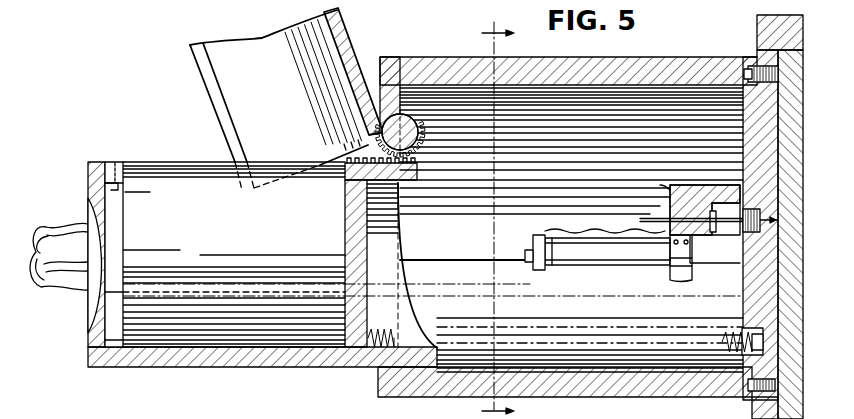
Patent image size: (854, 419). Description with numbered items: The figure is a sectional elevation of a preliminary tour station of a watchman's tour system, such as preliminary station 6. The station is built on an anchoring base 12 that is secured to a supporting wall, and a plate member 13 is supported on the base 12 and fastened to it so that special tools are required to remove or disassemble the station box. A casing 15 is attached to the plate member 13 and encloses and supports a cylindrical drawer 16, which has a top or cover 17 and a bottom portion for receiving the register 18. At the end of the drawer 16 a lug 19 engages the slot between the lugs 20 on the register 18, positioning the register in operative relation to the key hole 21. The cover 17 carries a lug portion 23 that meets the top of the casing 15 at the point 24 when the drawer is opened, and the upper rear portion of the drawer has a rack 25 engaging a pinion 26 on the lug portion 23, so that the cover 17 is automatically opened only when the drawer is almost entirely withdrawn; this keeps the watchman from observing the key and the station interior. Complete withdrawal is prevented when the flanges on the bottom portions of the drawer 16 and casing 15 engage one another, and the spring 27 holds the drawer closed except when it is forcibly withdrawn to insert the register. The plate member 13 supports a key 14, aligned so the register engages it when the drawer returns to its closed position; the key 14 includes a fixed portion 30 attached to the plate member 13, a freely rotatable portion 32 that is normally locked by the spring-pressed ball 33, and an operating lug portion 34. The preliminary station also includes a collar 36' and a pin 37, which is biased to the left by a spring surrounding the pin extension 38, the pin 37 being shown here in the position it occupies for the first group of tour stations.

The preliminary station 6 is at (505, 220).
The anchoring base 12 is at (757, 57).
The plate member 13 is at (757, 163).
The key 14 is at (583, 256).
The casing 15 is at (628, 67).
The cylindrical drawer 16 is at (237, 368).
The cover 17 is at (340, 52).
The register 18 is at (167, 148).
The lug 19 is at (113, 192).
The lugs 20 is at (113, 170).
The key hole 21 is at (343, 262).
The lug portion 23 is at (426, 136).
The point 24 is at (416, 118).
The rack 25 is at (345, 139).
The pinion 26 is at (420, 160).
The spring 27 is at (397, 340).
The fixed portion 30 is at (618, 262).
The freely rotatable portion 32 is at (538, 270).
The spring-pressed ball 33 is at (545, 236).
The operating lug portion 34 is at (527, 256).
The collar 36' is at (700, 233).
The pin 37 is at (650, 220).
The pin extension 38 is at (767, 232).